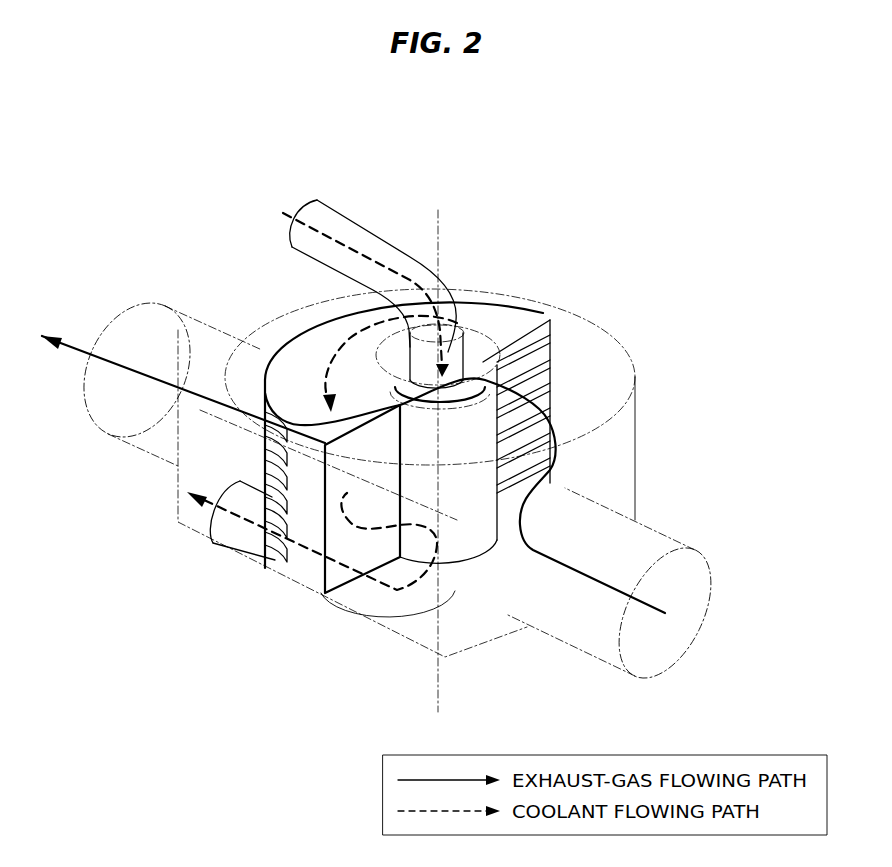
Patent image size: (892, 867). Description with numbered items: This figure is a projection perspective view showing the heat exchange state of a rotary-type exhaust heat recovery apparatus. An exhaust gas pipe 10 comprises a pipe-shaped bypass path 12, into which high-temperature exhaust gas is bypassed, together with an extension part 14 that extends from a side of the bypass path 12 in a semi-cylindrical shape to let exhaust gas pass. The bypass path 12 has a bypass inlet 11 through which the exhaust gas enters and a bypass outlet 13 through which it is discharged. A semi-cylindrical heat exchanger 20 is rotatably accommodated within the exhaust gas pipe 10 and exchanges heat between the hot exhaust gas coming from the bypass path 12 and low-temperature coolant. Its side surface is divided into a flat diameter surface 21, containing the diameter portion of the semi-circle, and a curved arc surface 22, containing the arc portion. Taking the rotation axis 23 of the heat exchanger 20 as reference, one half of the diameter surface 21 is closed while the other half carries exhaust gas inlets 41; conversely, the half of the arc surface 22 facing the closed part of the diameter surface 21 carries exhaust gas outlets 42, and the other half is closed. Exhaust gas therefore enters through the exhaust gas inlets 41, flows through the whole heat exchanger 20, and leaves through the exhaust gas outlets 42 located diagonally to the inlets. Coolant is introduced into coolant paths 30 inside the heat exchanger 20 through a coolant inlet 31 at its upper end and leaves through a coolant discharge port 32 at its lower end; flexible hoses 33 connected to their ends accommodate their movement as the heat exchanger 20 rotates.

The exhaust gas pipe 10 is at (772, 377).
The bypass inlet 11 is at (682, 600).
The bypass path 12 is at (635, 538).
The bypass outlet 13 is at (144, 336).
The extension part 14 is at (607, 390).
The heat exchanger 20 is at (304, 705).
The diameter surface 21 is at (352, 548).
The arc surface 22 is at (312, 571).
The rotation axis 23 is at (440, 210).
The coolant paths 30 is at (532, 337).
The coolant inlet 31 is at (455, 322).
The coolant discharge port 32 is at (450, 580).
The hoses 33 is at (310, 215).
The exhaust gas inlets 41 is at (537, 355).
The exhaust gas outlets 42 is at (282, 510).